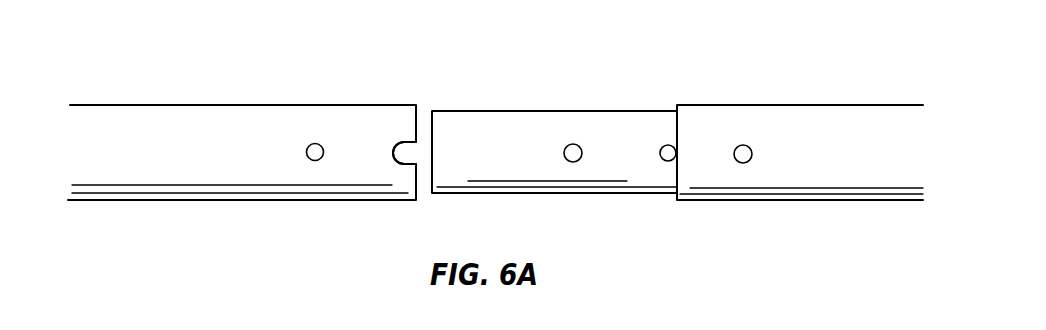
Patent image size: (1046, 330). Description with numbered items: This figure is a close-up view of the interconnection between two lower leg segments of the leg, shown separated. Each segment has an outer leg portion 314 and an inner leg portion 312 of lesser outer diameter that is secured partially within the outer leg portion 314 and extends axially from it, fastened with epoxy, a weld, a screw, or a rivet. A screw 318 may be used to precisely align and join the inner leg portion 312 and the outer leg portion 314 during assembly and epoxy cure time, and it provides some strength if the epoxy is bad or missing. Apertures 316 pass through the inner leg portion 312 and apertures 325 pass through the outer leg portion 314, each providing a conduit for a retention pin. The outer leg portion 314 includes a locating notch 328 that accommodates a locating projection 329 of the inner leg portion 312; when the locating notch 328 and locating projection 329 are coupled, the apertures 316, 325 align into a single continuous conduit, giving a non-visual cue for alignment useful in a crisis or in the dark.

The inner leg portion 312 is at (505, 128).
The outer leg portion 314 is at (123, 130).
The apertures 316 is at (572, 144).
The screw 318 is at (745, 145).
The apertures 325 is at (321, 146).
The locating notch 328 is at (403, 147).
The locating projection 329 is at (665, 145).